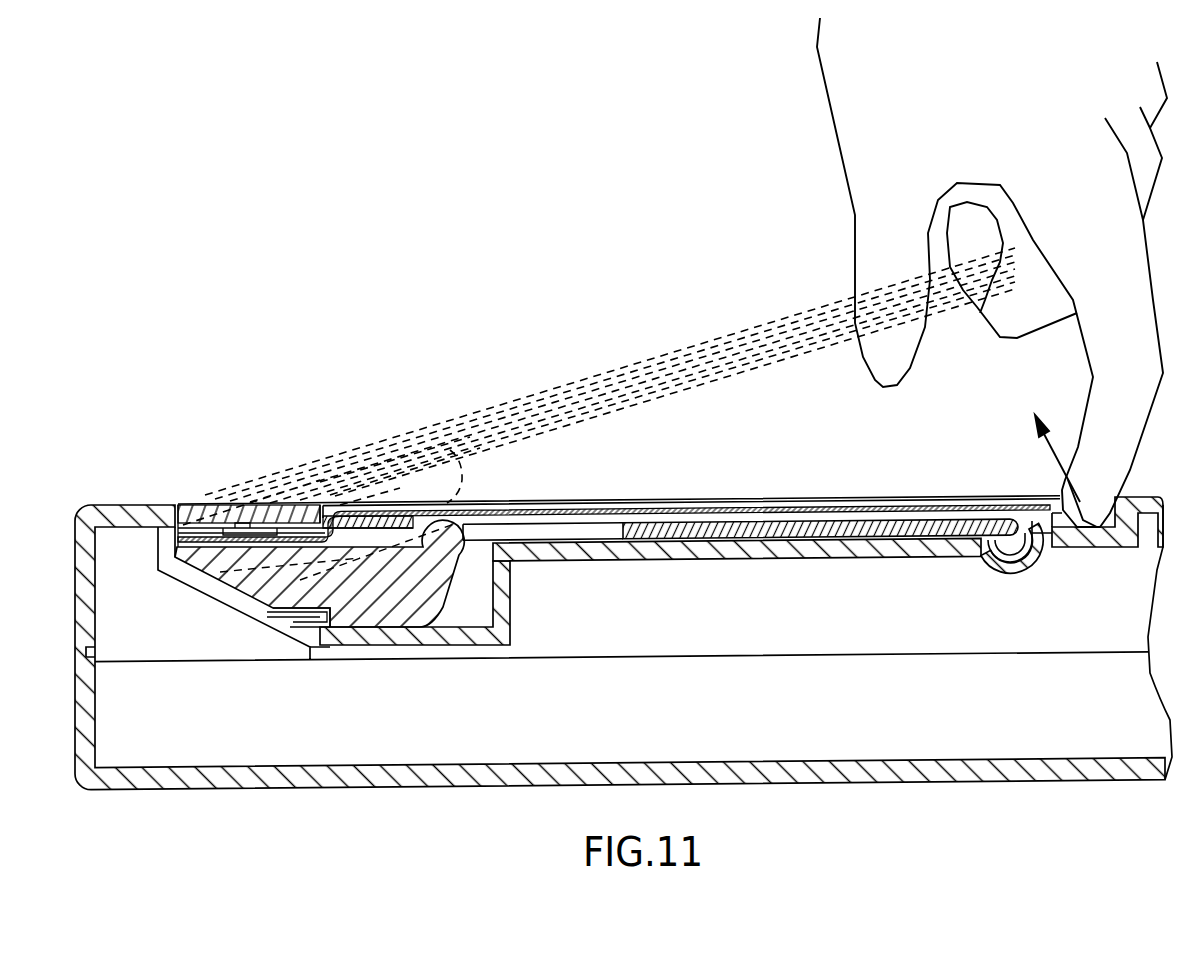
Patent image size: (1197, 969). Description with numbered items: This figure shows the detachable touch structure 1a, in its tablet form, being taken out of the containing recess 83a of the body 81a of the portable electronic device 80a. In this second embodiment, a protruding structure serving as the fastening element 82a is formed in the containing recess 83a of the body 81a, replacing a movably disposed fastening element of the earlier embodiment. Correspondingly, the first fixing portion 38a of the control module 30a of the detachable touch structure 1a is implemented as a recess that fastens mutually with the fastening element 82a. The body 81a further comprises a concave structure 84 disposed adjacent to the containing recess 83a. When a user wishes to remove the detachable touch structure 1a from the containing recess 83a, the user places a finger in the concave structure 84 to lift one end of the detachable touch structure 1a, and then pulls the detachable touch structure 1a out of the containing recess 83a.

The detachable touch structure 1a is at (557, 305).
The portable electronic device 80a is at (93, 440).
The body 81a is at (147, 505).
The fastening element 82a is at (293, 613).
The containing recess 83a is at (473, 620).
The concave structure 84 is at (1110, 520).
The control module 30a is at (407, 617).
The first fixing portion 38a is at (327, 647).